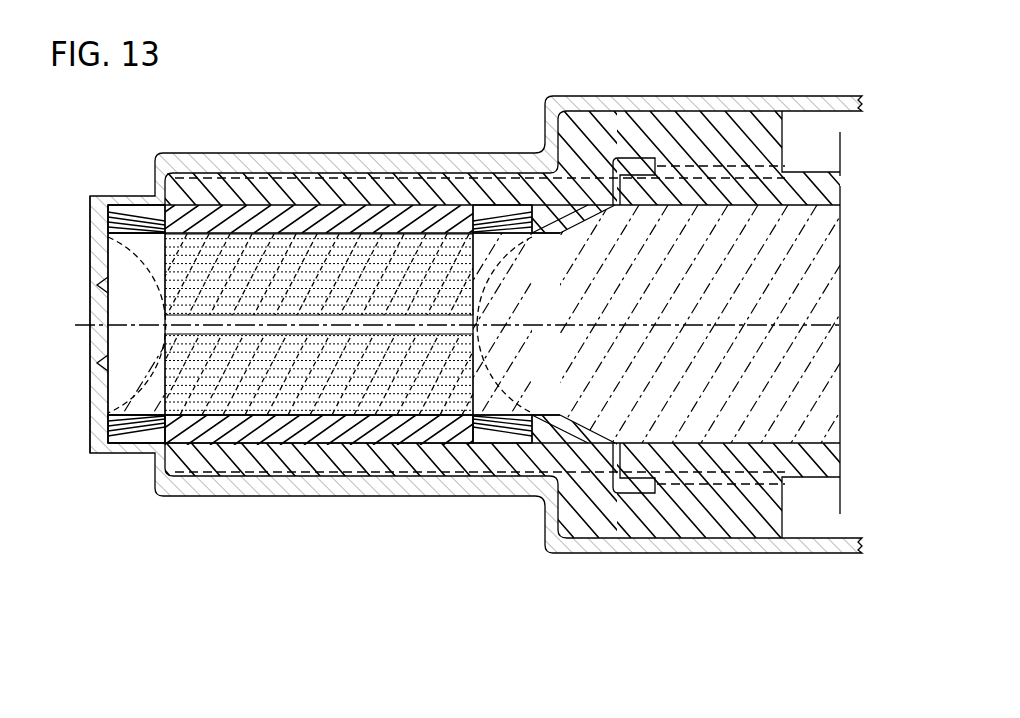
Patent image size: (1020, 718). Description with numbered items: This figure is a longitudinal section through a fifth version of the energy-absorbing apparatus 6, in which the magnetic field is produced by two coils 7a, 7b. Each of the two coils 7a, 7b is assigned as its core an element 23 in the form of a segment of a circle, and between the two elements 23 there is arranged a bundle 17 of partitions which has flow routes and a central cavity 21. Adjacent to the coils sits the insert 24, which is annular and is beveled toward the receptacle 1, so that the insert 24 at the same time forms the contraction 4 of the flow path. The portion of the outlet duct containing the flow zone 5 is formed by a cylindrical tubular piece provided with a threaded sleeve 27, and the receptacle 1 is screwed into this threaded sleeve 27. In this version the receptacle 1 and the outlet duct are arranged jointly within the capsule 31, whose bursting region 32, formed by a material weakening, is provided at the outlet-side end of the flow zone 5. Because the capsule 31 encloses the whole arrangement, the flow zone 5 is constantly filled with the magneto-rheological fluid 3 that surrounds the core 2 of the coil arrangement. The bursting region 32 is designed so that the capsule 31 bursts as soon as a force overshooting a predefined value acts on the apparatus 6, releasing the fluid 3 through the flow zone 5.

The receptacle 1 is at (733, 187).
The optical fiber stub 2 is at (203, 305).
The magneto-rheological fluid 3 is at (768, 380).
The contraction 4 is at (583, 270).
The flow zone 5 is at (300, 187).
The ferrule assembly 6 is at (210, 428).
The coil 7a is at (163, 233).
The coil 7b is at (125, 433).
The bundle of partitions 17 is at (383, 242).
The central cavity 21 is at (278, 328).
The element in the form of a segment of a circle 23 is at (213, 213).
The insert 24 is at (553, 210).
The threaded sleeve 27 is at (773, 522).
The capsule 31 is at (790, 102).
The bursting region 32 is at (100, 310).